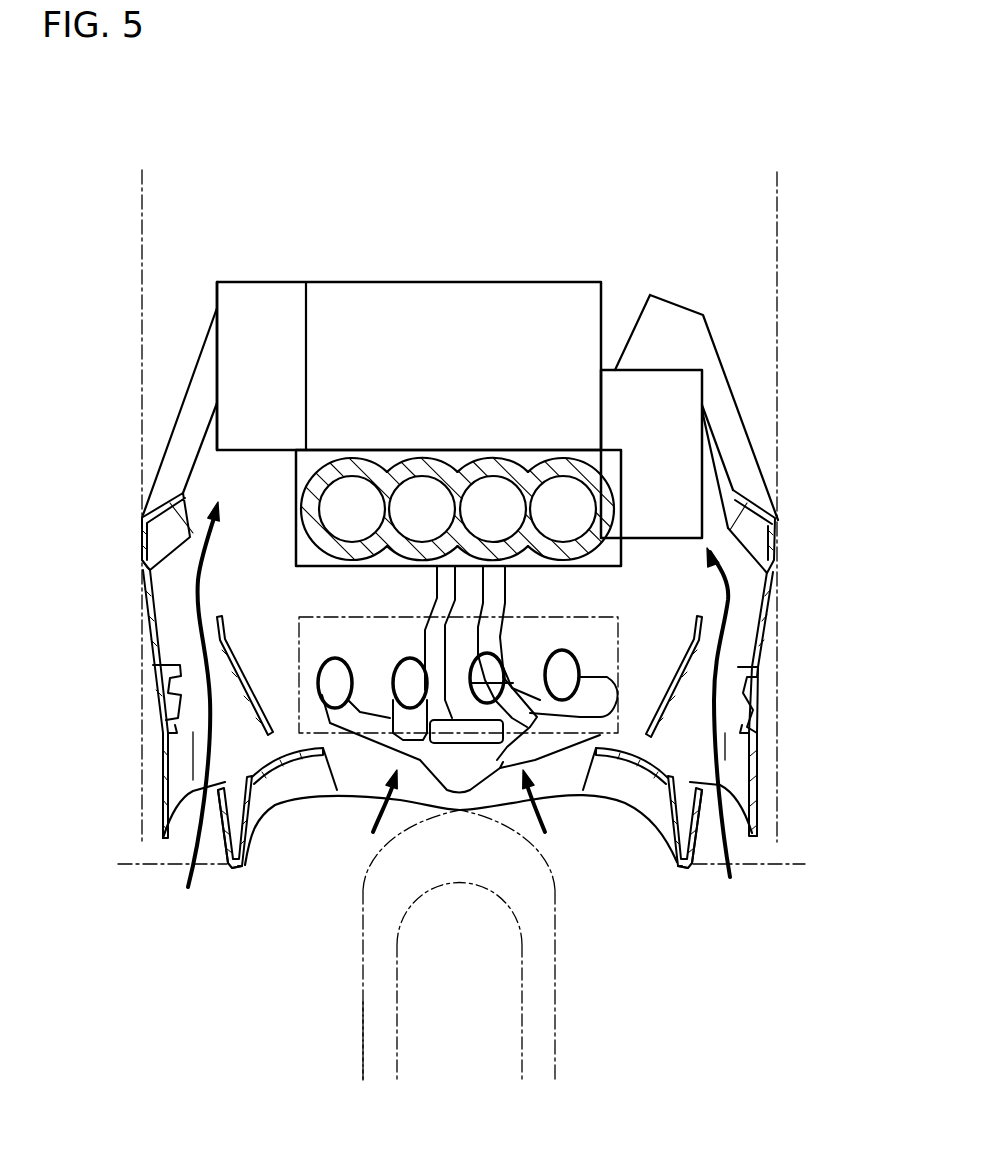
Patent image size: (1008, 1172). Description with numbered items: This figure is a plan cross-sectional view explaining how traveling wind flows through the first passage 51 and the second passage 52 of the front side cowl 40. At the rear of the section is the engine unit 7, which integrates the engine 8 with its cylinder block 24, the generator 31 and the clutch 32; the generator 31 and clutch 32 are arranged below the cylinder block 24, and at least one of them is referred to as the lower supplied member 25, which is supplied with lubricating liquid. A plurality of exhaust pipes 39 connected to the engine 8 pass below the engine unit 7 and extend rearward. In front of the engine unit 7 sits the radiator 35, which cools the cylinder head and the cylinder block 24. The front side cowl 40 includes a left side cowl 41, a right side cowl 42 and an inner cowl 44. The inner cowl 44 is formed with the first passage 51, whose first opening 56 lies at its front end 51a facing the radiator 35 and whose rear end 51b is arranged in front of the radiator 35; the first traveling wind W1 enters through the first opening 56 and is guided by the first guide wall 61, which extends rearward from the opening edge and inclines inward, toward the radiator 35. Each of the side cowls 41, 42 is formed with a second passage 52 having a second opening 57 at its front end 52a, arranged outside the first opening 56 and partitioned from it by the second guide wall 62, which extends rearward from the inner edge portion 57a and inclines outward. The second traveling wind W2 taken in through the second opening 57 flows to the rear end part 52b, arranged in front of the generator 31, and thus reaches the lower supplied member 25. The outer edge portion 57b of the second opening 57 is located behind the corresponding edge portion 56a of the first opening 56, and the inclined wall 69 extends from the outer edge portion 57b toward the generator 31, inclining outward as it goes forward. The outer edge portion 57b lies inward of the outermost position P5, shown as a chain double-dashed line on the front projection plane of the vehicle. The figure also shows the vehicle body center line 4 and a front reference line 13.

The vehicle body center line 4 is at (397, 1050).
The engine unit 7 is at (410, 288).
The engine 8 is at (423, 290).
The front wheel reference 13 is at (363, 1002).
The cylinder block 24 is at (363, 470).
The lower supplied member 25 is at (449, 318).
The generator 31 is at (648, 393).
The clutch 32 is at (263, 290).
The radiator 35 is at (568, 632).
The exhaust pipes 39 is at (523, 740).
The front side cowl 40 is at (129, 497).
The left side cowl 41 is at (778, 563).
The right side cowl 42 is at (140, 563).
The inner cowl 44 is at (285, 812).
The first passage 51 is at (523, 848).
The front end of the first passage 51a is at (362, 800).
The rear end of the first passage 51b is at (634, 752).
The second passage 52 is at (187, 671).
The front end of the second passage 52a is at (468, 893).
The rear end part of the second passage 52b is at (212, 463).
The first opening 56 is at (506, 945).
The edge portion of the first opening 56a is at (242, 868).
The second opening 57 is at (463, 914).
The inner edge portion 57a is at (218, 840).
The outer edge portion 57b is at (162, 848).
The first guide wall 61 is at (293, 821).
The second guide wall 62 is at (237, 866).
The inclined wall 69 is at (163, 787).
The outermost position P5 is at (142, 255).
The first traveling wind W1 is at (459, 834).
The second traveling wind W2 is at (196, 618).